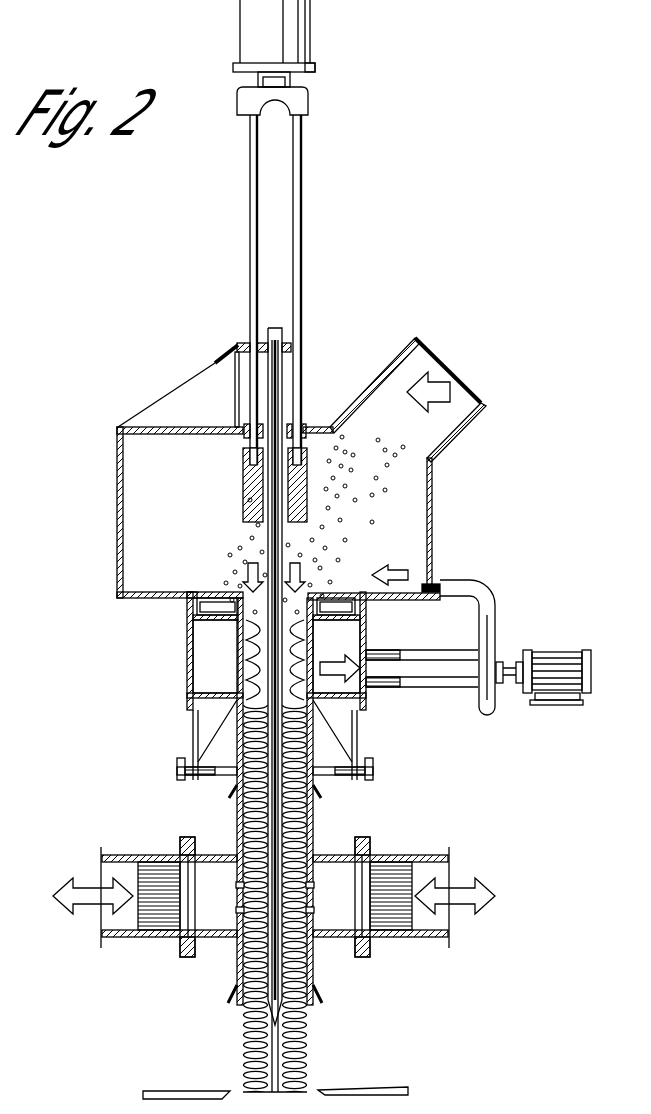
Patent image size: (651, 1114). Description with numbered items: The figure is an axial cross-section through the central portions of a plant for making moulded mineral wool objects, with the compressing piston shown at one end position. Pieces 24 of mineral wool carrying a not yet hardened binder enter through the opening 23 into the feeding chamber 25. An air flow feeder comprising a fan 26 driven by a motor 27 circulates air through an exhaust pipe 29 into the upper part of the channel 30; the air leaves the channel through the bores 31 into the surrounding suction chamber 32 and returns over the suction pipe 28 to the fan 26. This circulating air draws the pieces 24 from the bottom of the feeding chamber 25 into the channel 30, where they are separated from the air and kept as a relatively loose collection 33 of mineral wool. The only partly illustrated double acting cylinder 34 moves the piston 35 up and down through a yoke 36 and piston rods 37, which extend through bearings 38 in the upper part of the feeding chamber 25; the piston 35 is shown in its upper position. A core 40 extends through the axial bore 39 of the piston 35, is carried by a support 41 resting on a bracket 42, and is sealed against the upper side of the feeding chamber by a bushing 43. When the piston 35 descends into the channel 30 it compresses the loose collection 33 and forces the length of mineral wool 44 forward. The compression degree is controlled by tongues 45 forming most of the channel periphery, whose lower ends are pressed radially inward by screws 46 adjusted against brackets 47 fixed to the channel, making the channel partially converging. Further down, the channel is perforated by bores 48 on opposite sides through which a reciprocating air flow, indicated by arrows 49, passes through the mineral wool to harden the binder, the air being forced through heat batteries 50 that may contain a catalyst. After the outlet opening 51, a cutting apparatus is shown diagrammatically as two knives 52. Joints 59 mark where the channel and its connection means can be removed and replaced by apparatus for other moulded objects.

The opening 23 is at (465, 398).
The pieces of mineral wool 24 is at (375, 521).
The feeding chamber 25 is at (187, 505).
The fan 26 is at (490, 642).
The motor 27 is at (556, 651).
The suction pipe 28 is at (427, 682).
The exhaust pipe 29 is at (483, 590).
The channel 30 is at (245, 604).
The bores 31 is at (239, 677).
The suction chamber 32 is at (228, 645).
The loose collection of mineral wool 33 is at (240, 686).
The double acting cylinder 34 is at (305, 34).
The piston 35 is at (247, 478).
The yoke 36 is at (305, 100).
The piston rods 37 is at (250, 178).
The bearings 38 is at (305, 428).
The bore 39 is at (262, 505).
The core 40 is at (282, 378).
The support 41 is at (290, 347).
The bracket 42 is at (185, 397).
The bushing 43 is at (290, 426).
The length of mineral wool 44 is at (312, 832).
The tongues 45 is at (237, 780).
The screws 46 is at (177, 771).
The brackets 47 is at (357, 735).
The bores 48 is at (231, 912).
The arrows 49 is at (82, 885).
The heat batteries 50 is at (160, 918).
The outlet opening 51 is at (313, 1005).
The knives 52 is at (193, 1090).
The joints 59 is at (193, 595).